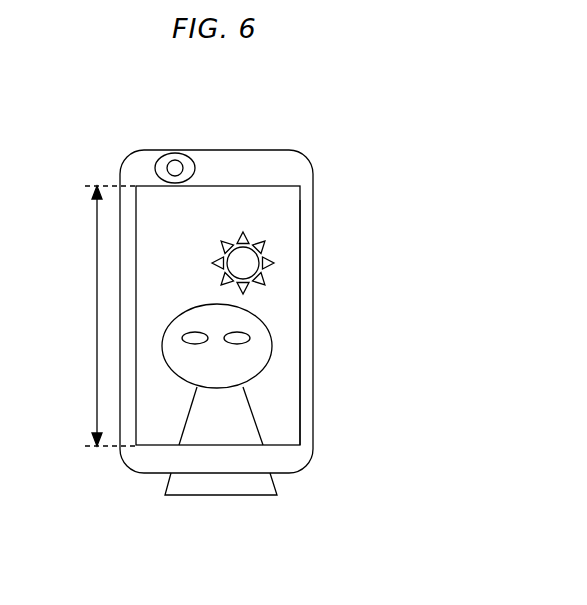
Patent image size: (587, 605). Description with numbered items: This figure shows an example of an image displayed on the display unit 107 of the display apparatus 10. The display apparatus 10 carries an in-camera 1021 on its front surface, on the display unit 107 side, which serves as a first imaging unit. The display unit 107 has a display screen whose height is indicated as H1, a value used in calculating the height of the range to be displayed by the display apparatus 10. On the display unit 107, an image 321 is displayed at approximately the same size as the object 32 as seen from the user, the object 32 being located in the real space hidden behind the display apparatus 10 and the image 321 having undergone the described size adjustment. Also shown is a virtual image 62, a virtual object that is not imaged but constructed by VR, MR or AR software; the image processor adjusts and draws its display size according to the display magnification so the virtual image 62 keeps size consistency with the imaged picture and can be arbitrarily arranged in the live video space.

The display apparatus 10 is at (254, 150).
The in-camera 1021 is at (174, 152).
The display unit 107 is at (301, 206).
The virtual image 62 is at (276, 262).
The image 321 is at (272, 348).
The object 32 is at (278, 488).
The height of the display screen H1 is at (97, 316).